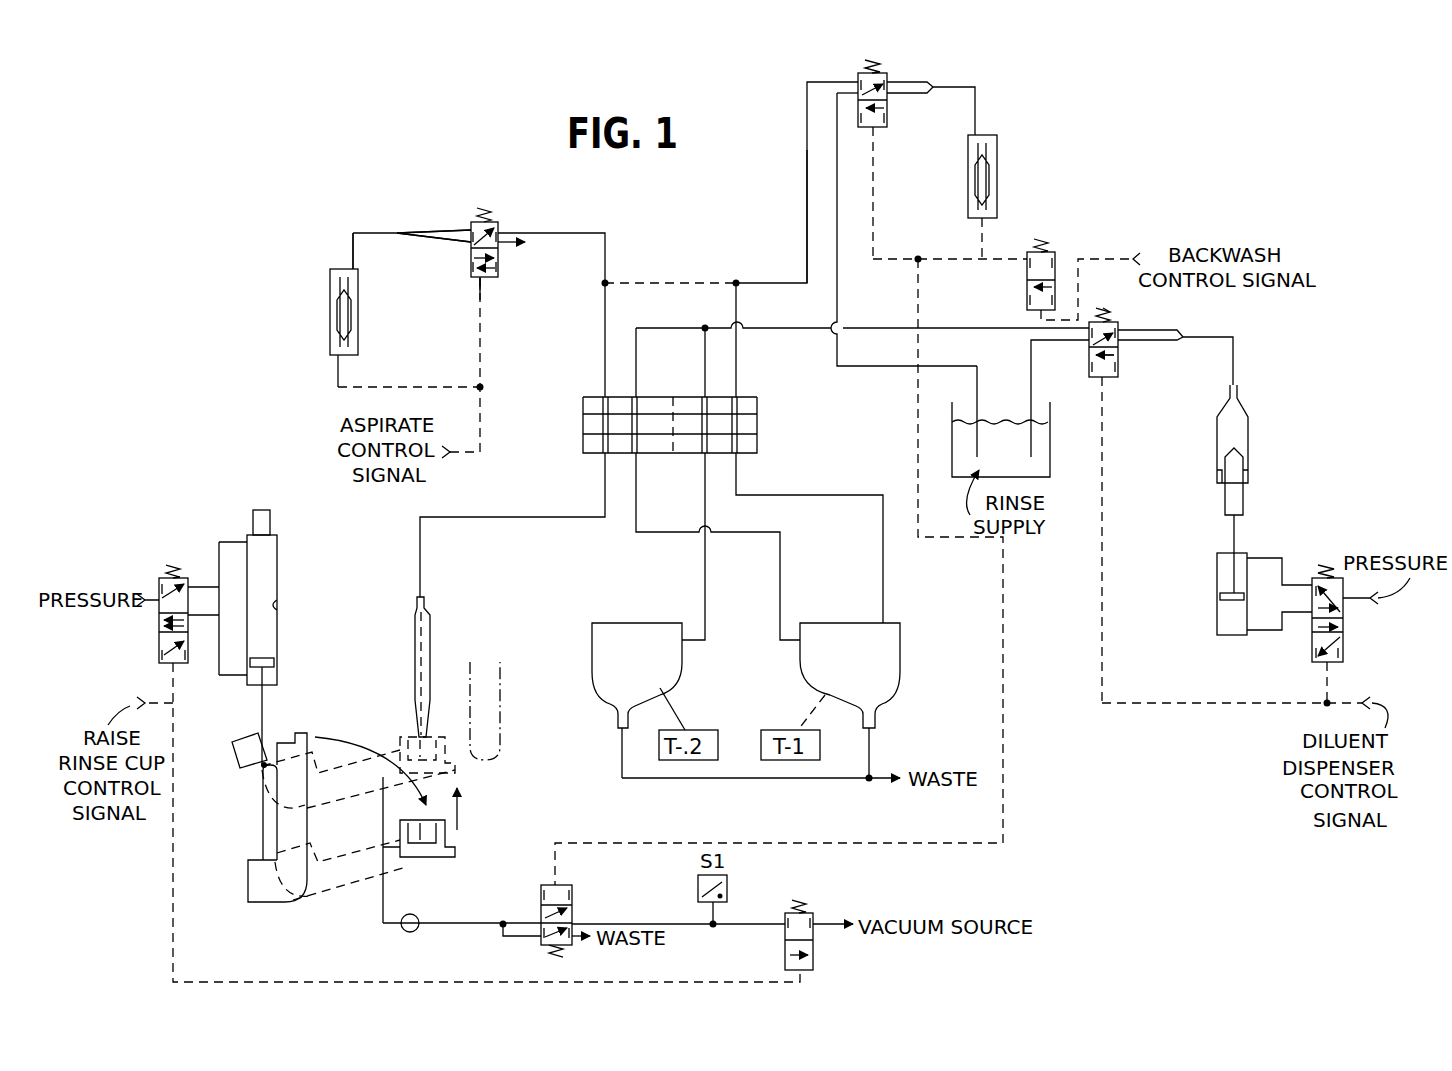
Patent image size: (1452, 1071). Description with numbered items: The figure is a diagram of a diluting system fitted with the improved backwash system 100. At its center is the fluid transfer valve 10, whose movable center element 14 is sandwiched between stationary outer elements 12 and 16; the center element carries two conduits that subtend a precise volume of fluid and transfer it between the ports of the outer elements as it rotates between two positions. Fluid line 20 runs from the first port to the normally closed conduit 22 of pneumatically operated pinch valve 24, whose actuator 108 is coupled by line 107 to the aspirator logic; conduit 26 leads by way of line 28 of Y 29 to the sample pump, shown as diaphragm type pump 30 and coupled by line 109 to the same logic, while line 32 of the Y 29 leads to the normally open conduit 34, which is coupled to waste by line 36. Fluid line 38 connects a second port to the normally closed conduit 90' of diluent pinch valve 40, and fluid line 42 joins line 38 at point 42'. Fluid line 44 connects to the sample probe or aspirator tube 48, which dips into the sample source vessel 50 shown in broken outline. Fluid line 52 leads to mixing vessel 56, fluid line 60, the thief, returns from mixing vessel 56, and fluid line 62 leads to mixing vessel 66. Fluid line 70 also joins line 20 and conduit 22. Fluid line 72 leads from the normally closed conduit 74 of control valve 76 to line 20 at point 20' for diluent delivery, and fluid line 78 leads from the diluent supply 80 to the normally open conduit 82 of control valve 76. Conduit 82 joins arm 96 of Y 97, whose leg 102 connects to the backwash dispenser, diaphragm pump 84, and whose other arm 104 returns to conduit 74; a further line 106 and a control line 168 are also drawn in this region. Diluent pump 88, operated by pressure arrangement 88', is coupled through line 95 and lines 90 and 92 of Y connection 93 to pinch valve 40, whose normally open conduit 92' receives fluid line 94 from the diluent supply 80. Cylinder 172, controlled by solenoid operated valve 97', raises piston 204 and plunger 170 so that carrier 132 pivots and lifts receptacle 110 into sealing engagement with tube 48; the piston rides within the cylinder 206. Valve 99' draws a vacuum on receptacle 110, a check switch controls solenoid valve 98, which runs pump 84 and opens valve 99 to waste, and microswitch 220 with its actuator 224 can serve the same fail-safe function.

The fluid transfer valve 10 is at (770, 425).
The stationary outer element 12 is at (755, 404).
The center element 14 is at (758, 424).
The stationary outer element 16 is at (758, 445).
The fluid line 20 is at (553, 300).
The point 20' is at (672, 270).
The normally closed conduit 22 is at (490, 224).
The pneumatically operated pinch valve 24 is at (495, 280).
The conduit 26 is at (455, 230).
The line 28 is at (353, 258).
The Y connection 29 is at (403, 232).
The diaphragm type pump 30 is at (363, 312).
The line 32 is at (428, 246).
The normally open conduit 34 is at (474, 256).
The line 36 is at (520, 252).
The fluid line 38 is at (946, 330).
The diluent pinch valve 40 is at (1115, 372).
The fluid line 42 is at (733, 359).
The point 42' is at (682, 347).
The fluid line 44 is at (540, 520).
The aspirator tube 48 is at (432, 632).
The sample source vessel 50 is at (502, 722).
The fluid line 52 is at (781, 570).
The mixing vessel 56 is at (858, 623).
The fluid line 60 is at (822, 493).
The fluid line 62 is at (705, 568).
The mixing vessel 66 is at (645, 623).
The fluid line 70 is at (738, 360).
The fluid line 72 is at (807, 165).
The normally closed conduit 74 is at (850, 80).
The control valve 76 is at (880, 128).
The fluid line 78 is at (838, 278).
The diluent supply 80 is at (1051, 437).
The normally open conduit 82 is at (880, 100).
The diaphragm type pump 84 is at (998, 155).
The diluent pump 88 is at (1253, 489).
The pressure arrangement 88' is at (1356, 604).
The line 90 is at (1136, 338).
The normally closed conduit 90' is at (1130, 304).
The line 92 is at (1156, 361).
The normally open conduit 92' is at (1075, 369).
The Y connection 93 is at (1180, 330).
The fluid line 94 is at (1030, 385).
The line 95 is at (1234, 362).
The conduit 96 is at (908, 96).
The Y connection 97 is at (967, 80).
The solenoid operated valve 97' is at (181, 605).
The solenoid valve 98 is at (1040, 244).
The valve 99 is at (547, 903).
The valve 99' is at (827, 923).
The backwash system 100 is at (285, 598).
The line 102 is at (977, 118).
The line 104 is at (900, 80).
The valve line 106 is at (870, 128).
The line 107 is at (483, 350).
The actuator 108 is at (480, 283).
The line 109 is at (338, 392).
The receptacle 110 is at (452, 772).
The carrier 132 is at (337, 886).
The control line 168 is at (1003, 260).
The plunger 170 is at (270, 712).
The cylinder 172 is at (280, 552).
The piston 204 is at (270, 665).
The cylinder 206 is at (278, 605).
The microswitch 220 is at (263, 770).
The actuator 224 is at (262, 772).